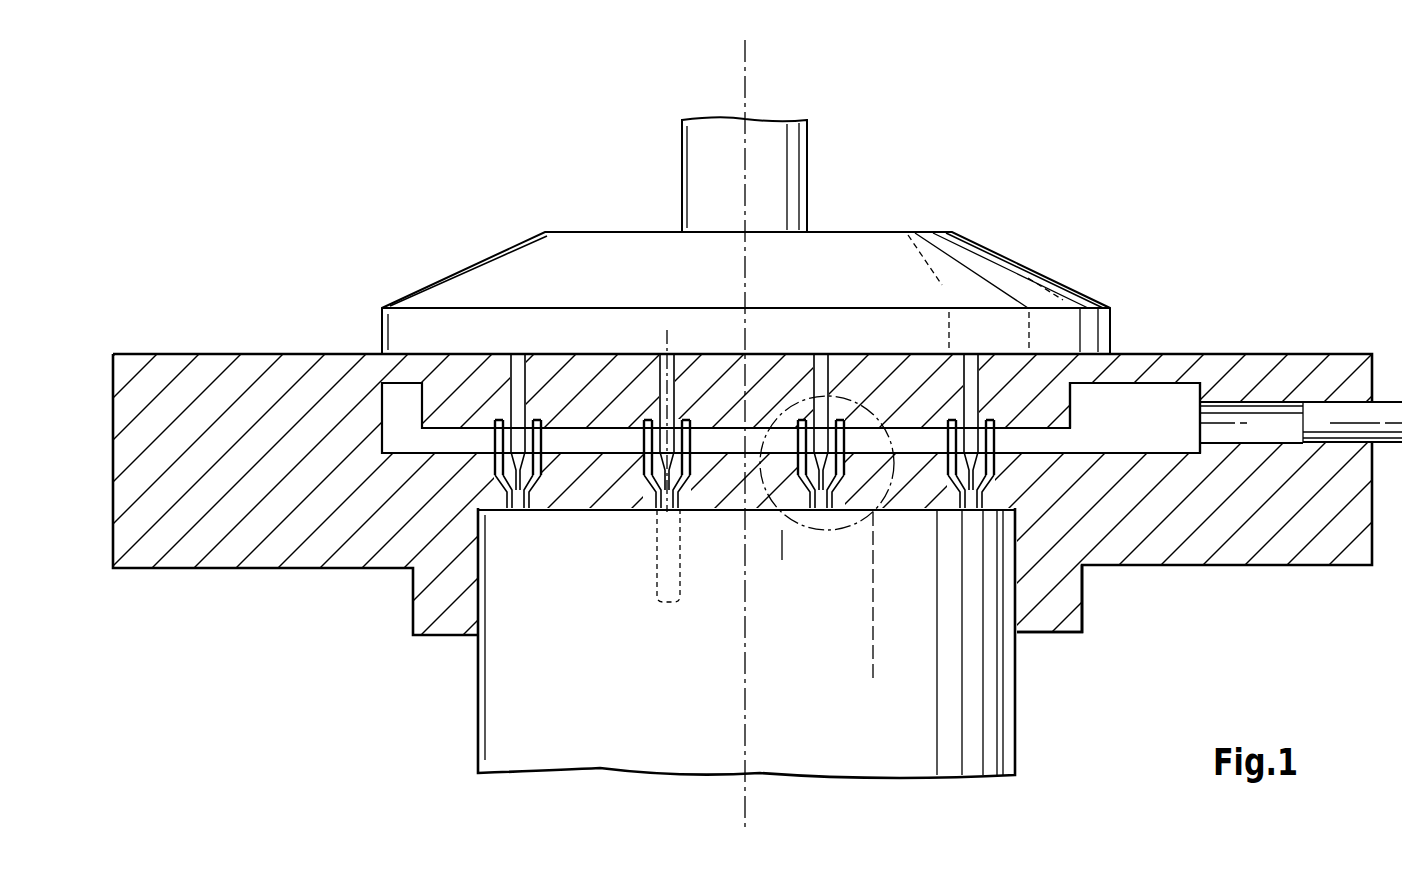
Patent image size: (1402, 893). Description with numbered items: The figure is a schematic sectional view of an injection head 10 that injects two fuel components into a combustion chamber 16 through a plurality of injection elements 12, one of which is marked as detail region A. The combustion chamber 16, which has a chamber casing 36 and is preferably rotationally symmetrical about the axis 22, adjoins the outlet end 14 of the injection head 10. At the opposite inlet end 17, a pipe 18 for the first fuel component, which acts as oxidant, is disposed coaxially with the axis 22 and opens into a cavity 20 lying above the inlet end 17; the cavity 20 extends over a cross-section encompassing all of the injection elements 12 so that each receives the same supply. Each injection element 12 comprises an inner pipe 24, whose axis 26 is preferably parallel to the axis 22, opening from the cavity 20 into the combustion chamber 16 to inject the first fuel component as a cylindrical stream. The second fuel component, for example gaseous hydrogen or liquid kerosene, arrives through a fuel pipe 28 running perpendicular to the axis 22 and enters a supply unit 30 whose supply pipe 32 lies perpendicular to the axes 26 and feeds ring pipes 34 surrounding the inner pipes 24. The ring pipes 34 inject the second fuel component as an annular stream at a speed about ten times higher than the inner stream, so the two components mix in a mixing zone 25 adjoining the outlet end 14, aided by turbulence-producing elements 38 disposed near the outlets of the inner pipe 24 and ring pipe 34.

The injection head 10 is at (172, 345).
The injection element 12 is at (523, 354).
The outlet end 14 is at (543, 513).
The combustion chamber 16 is at (945, 740).
The inlet end 17 is at (875, 354).
The pipe 18 is at (806, 202).
The cavity 20 is at (582, 244).
The axis 22 is at (748, 105).
The inner pipe 24 is at (672, 352).
The mixing zone 25 is at (658, 562).
The axis of the inner pipe 26 is at (657, 339).
The fuel pipe 28 is at (1282, 435).
The supply unit 30 is at (1167, 435).
The supply pipe 32 is at (911, 438).
The ring pipe 34 is at (992, 462).
The chamber casing 36 is at (1018, 681).
The turbulence-producing element 38 is at (643, 512).
The detail region A is at (838, 532).